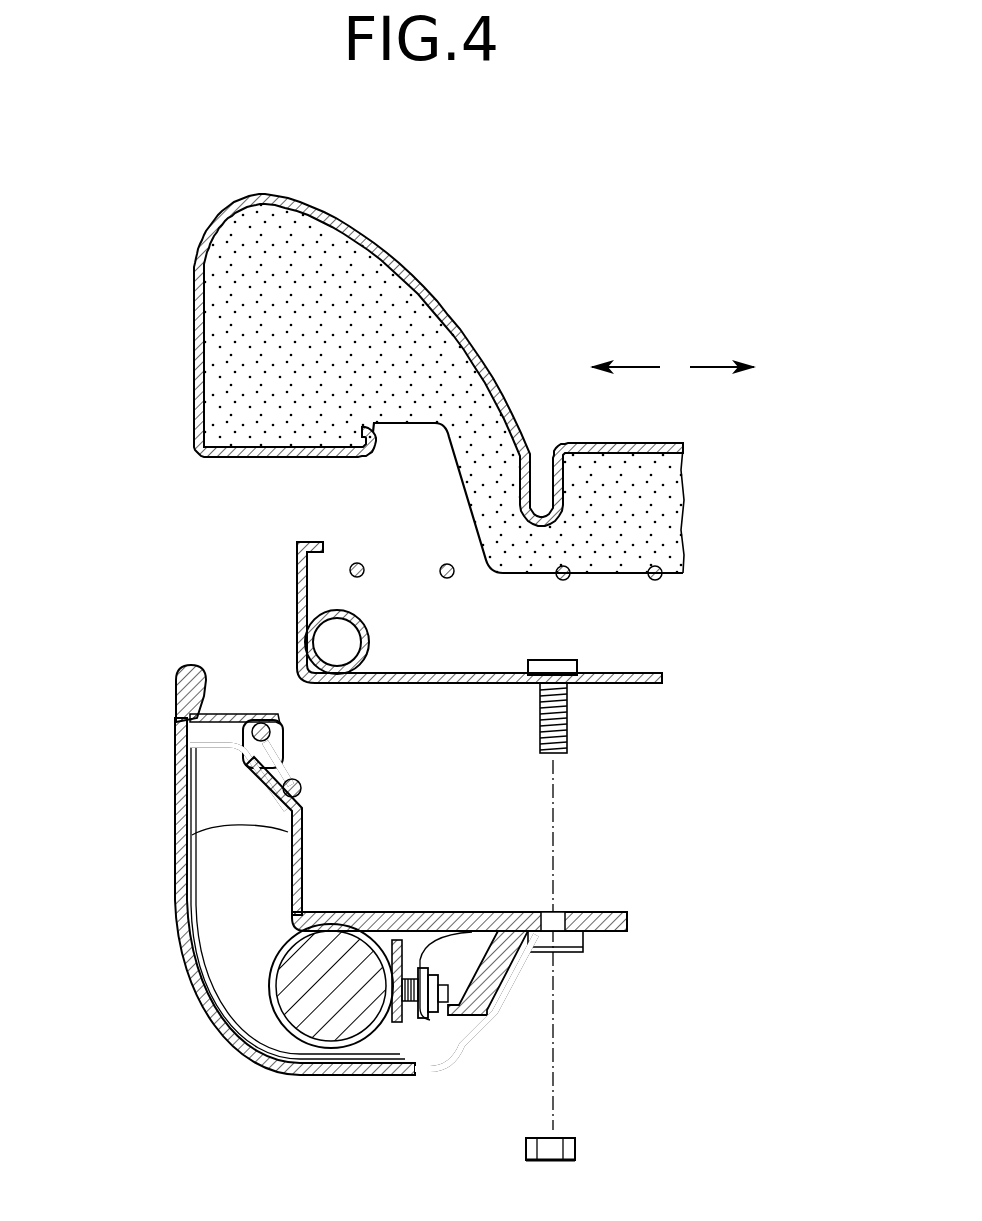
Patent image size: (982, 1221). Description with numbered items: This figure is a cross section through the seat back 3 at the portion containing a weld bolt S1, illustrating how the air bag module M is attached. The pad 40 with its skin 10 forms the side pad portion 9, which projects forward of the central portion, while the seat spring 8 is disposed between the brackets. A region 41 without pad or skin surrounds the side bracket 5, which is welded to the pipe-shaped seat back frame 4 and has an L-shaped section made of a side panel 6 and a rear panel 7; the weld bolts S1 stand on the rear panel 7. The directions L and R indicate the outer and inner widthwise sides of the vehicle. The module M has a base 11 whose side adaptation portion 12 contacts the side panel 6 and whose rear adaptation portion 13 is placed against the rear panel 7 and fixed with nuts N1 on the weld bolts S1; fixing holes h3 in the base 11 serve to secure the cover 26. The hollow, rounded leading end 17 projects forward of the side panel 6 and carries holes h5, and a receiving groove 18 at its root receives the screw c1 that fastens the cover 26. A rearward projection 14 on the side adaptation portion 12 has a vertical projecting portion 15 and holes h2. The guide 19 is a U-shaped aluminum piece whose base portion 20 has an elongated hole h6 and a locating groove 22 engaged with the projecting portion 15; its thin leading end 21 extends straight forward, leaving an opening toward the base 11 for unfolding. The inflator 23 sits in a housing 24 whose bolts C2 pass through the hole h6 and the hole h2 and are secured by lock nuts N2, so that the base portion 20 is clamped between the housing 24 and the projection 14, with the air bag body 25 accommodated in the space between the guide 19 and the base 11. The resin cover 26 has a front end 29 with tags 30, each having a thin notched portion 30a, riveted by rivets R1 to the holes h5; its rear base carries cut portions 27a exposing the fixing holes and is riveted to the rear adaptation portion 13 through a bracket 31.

The seat back 3 is at (594, 252).
The side pad portion 9 is at (350, 252).
The skin 10 is at (441, 305).
The pad 40 is at (468, 392).
The S-shape seat spring 8 is at (444, 579).
The region 41 is at (461, 634).
The left direction L is at (612, 368).
The right direction R is at (739, 368).
The seat back frame 4 is at (336, 606).
The side bracket 5 is at (434, 694).
The side panel 6 is at (296, 550).
The rear panel 7 is at (606, 690).
The weld bolt S1 is at (553, 660).
The nut N1 is at (576, 1148).
The air bag module M is at (185, 1020).
The inflator 23 is at (262, 1073).
The front end 29 is at (178, 666).
The tag 30 is at (198, 712).
The notched portion 30a is at (190, 742).
The leading end 17 is at (244, 716).
The hole h5 is at (260, 716).
The rivet R1 is at (278, 735).
The receiving groove 18 is at (283, 752).
The screw c1 is at (302, 791).
The air bag body 25 is at (205, 790).
The cover 26 is at (185, 950).
The guide 19 is at (198, 976).
The leading end 21 is at (183, 897).
The housing 24 is at (310, 1076).
The base 11 is at (478, 898).
The side adaptation portion 12 is at (292, 846).
The fixing hole h3 is at (562, 926).
The cut portion 27a is at (584, 950).
The rear adaptation portion 13 is at (612, 930).
The bracket 31 is at (502, 965).
The rearward projection 14 is at (422, 1070).
The hole h2 is at (452, 1040).
The base portion 20 is at (345, 960).
The elongated hole h6 is at (376, 1052).
The locating groove 22 is at (400, 972).
The projecting portion 15 is at (388, 990).
The lock nut N2 is at (440, 1012).
The bolt C2 is at (465, 1010).